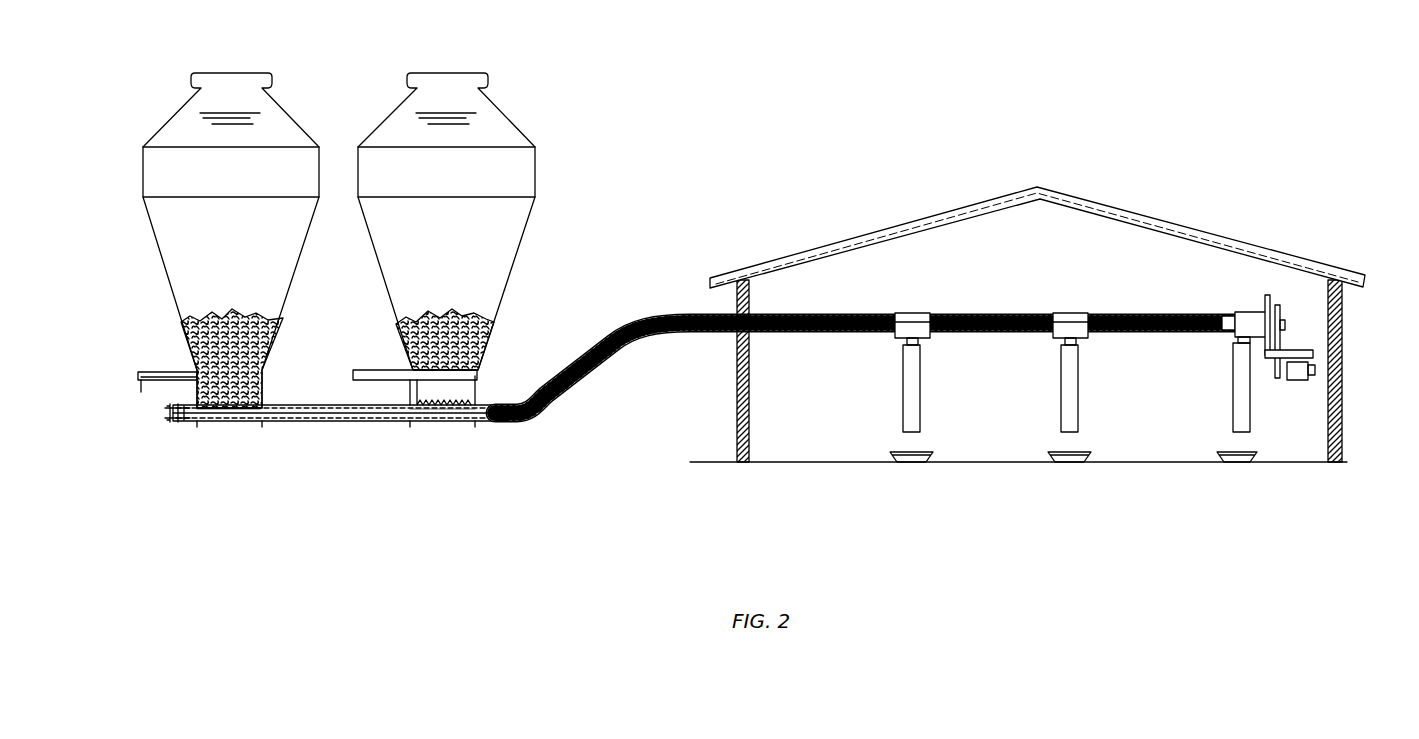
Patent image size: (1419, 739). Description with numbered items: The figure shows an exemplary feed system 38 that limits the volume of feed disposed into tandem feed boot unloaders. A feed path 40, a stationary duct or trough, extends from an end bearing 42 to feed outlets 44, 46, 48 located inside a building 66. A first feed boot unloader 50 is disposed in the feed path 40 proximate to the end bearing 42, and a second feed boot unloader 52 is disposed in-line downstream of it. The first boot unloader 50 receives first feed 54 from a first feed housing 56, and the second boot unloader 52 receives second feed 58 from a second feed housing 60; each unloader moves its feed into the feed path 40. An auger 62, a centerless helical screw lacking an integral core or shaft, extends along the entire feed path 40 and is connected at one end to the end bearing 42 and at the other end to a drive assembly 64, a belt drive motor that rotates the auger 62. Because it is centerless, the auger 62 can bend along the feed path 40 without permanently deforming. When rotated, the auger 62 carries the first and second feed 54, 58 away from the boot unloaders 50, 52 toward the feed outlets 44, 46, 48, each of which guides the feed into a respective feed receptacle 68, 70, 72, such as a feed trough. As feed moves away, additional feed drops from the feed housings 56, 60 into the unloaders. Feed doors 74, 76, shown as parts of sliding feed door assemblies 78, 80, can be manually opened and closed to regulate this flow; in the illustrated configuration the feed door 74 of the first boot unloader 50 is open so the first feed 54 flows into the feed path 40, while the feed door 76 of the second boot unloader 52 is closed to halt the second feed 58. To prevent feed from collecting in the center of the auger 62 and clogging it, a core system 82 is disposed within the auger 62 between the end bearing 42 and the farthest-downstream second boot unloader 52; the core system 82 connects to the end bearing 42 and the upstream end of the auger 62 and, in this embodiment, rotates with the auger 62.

The feed system 38 is at (643, 76).
The feed path 40 is at (641, 296).
The end bearing 42 is at (170, 413).
The feed outlet 44 is at (912, 379).
The feed outlet 46 is at (1070, 379).
The feed outlet 48 is at (1240, 378).
The first feed boot unloader 50 is at (227, 422).
The second feed boot unloader 52 is at (438, 423).
The first feed 54 is at (275, 338).
The first feed housing 56 is at (250, 278).
The second feed 58 is at (487, 340).
The second feed housing 60 is at (466, 278).
The auger 62 is at (595, 373).
The drive assembly 64 is at (1298, 376).
The building 66 is at (1176, 176).
The feed receptacle 68 is at (905, 455).
The feed receptacle 70 is at (1060, 455).
The feed receptacle 72 is at (1225, 455).
The feed door 74 is at (170, 381).
The feed door 76 is at (477, 383).
The sliding feed door assembly 78 is at (170, 372).
The sliding feed door assembly 80 is at (392, 370).
The core system 82 is at (332, 414).